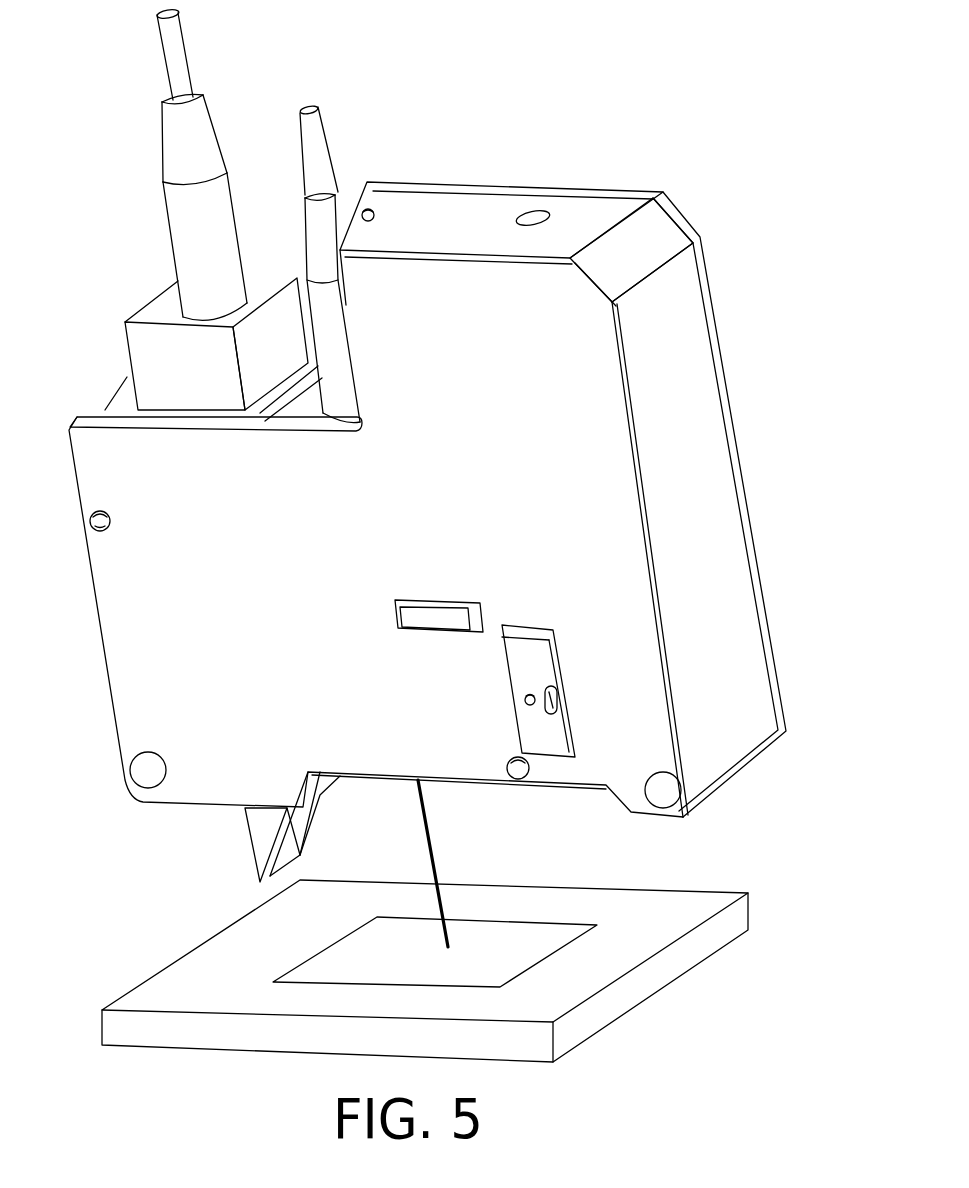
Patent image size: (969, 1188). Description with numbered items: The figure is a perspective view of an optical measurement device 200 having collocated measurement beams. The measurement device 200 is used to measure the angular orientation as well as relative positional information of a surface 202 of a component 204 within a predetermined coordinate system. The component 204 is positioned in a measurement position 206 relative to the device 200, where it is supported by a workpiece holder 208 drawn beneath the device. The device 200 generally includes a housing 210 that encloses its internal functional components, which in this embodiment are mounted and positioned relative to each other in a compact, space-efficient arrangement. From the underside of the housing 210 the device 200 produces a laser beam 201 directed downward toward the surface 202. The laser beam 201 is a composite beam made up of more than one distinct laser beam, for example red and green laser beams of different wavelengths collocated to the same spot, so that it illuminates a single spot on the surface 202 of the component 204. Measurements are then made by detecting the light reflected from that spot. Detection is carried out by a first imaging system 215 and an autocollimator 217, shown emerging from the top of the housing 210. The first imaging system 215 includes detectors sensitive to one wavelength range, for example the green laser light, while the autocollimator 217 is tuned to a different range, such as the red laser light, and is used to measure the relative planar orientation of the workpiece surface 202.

The measurement device 200 is at (574, 162).
The laser beam 201 is at (437, 858).
The surface 202 is at (414, 976).
The component 204 is at (525, 942).
The measurement position 206 is at (180, 924).
The workpiece holder 208 is at (577, 1033).
The housing 210 is at (678, 439).
The first imaging system 215 is at (193, 113).
The autocollimator 217 is at (318, 210).